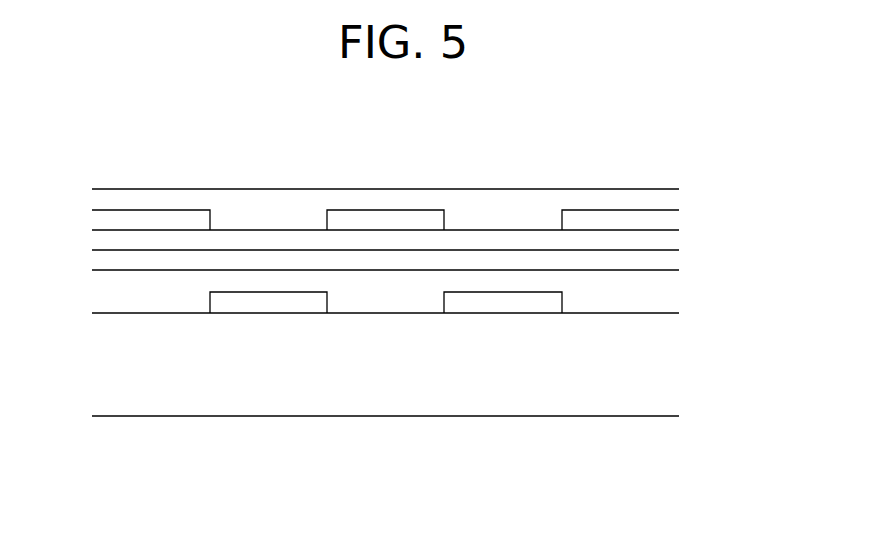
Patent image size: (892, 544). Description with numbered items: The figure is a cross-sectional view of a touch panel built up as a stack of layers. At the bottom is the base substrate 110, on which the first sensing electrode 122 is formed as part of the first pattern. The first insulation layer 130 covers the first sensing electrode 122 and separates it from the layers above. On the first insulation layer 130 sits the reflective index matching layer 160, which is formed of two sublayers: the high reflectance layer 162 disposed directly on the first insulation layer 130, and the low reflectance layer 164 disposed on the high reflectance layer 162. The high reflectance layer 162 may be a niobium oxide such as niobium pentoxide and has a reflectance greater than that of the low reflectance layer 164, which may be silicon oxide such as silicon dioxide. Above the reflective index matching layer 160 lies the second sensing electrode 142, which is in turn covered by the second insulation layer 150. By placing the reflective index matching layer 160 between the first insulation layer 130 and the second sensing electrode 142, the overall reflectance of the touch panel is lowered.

The base substrate 110 is at (673, 368).
The first sensing electrode 122 is at (503, 302).
The first insulation layer 130 is at (673, 292).
The second sensing electrode 142 is at (623, 215).
The second insulation layer 150 is at (673, 198).
The reflective index matching layer 160 is at (450, 249).
The high reflectance layer 162 is at (673, 258).
The low reflectance layer 164 is at (673, 232).